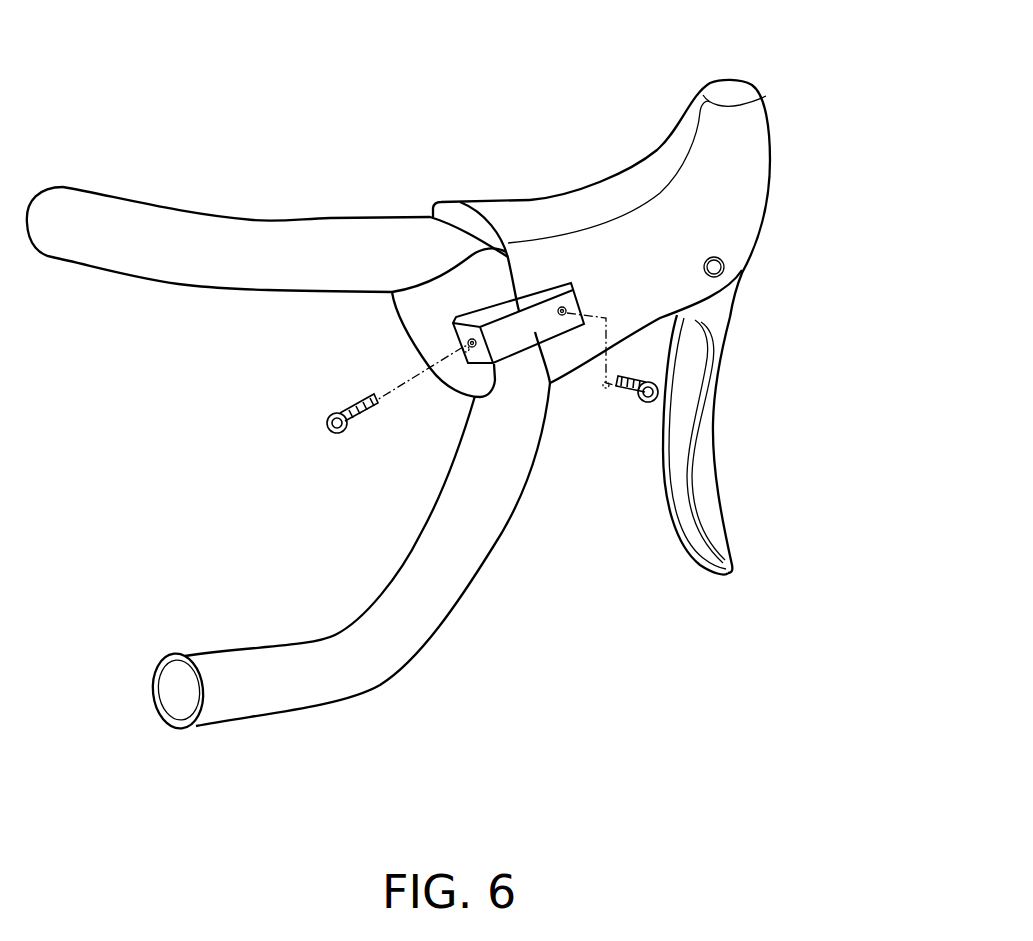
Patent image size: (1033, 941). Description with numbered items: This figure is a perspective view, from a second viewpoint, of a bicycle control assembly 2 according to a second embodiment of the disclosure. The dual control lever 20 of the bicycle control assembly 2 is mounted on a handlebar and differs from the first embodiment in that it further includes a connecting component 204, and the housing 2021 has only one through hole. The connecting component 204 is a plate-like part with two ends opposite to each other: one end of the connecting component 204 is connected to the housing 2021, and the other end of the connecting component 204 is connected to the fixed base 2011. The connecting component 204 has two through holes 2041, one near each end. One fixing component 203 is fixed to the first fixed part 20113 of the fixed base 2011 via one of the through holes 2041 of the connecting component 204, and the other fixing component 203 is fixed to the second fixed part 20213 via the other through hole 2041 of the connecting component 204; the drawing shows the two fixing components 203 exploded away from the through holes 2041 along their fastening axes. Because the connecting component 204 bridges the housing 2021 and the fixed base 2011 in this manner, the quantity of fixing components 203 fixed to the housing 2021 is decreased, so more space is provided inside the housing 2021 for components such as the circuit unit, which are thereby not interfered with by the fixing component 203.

The bicycle control assembly 2 is at (153, 30).
The dual control lever 20 is at (606, 158).
The fixed base 2011 is at (730, 203).
The first fixed part 20113 is at (605, 395).
The housing 2021 is at (484, 292).
The second fixed part 20213 is at (463, 352).
The fixing component 203 is at (330, 413).
The connecting component 204 is at (517, 340).
The through hole 2041 is at (562, 306).